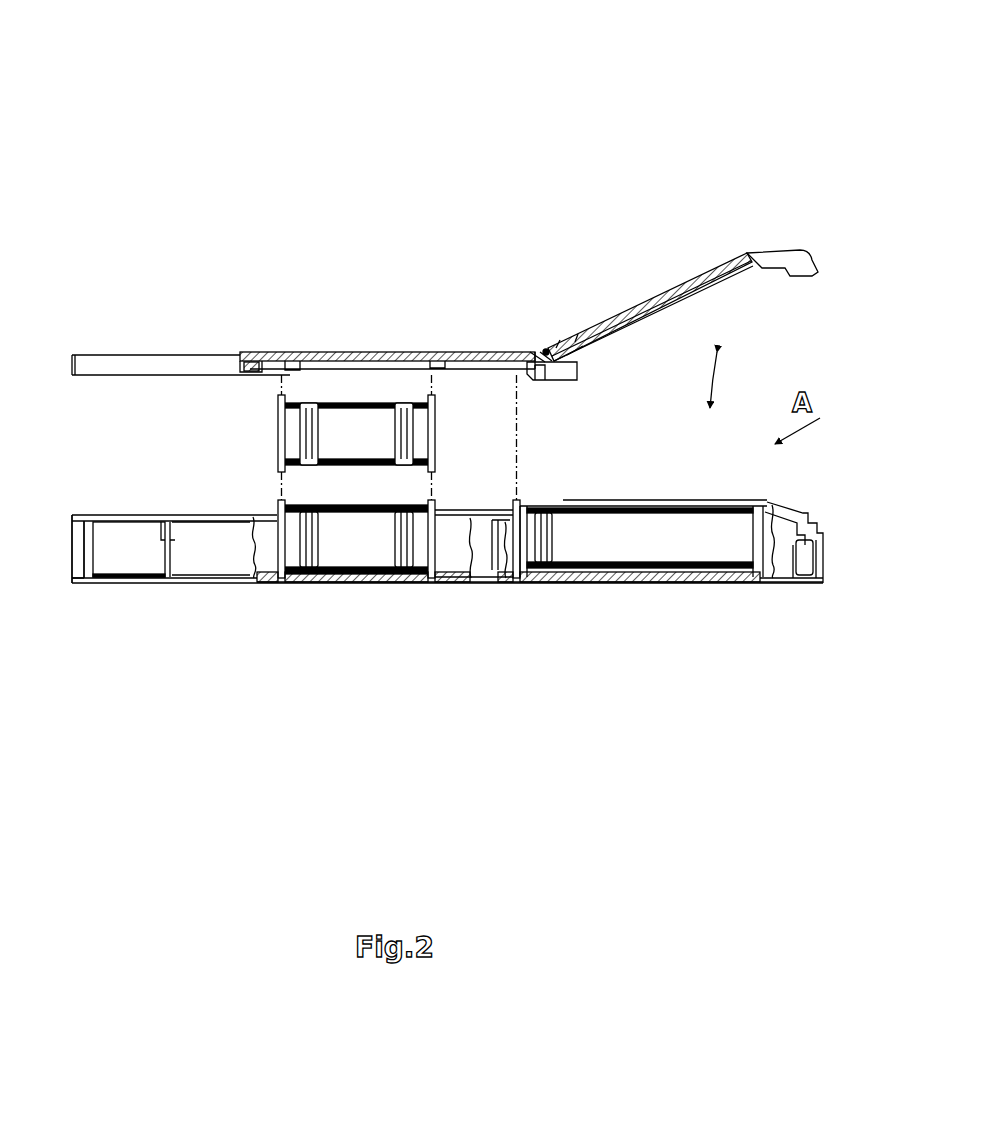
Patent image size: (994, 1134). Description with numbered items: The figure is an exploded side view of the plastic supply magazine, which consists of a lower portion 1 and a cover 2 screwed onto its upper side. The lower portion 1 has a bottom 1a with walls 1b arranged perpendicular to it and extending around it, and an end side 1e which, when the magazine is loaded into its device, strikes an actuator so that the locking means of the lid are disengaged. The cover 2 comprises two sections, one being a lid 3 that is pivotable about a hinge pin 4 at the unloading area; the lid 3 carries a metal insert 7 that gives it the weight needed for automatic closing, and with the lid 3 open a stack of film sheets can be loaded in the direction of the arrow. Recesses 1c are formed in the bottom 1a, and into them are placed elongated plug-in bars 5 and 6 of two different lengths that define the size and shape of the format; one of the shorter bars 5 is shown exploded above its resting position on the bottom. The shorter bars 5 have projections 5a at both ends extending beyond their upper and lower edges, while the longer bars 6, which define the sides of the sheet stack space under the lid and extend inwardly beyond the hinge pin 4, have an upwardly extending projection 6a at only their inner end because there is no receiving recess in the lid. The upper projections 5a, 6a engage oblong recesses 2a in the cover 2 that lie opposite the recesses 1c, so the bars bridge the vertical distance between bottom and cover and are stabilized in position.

The lower portion 1 is at (215, 553).
The bottom 1a is at (311, 580).
The walls 1b is at (80, 567).
The recesses 1c is at (437, 580).
The end side 1e is at (823, 560).
The cover 2 is at (163, 352).
The recesses 2a is at (278, 352).
The lid 3 is at (790, 262).
The hinge pin 4 is at (541, 352).
The plug-in bars 5 is at (357, 425).
The projections 5a is at (280, 471).
The plug-in bars 6 is at (625, 543).
The projection 6a is at (522, 500).
The metal insert 7 is at (680, 283).